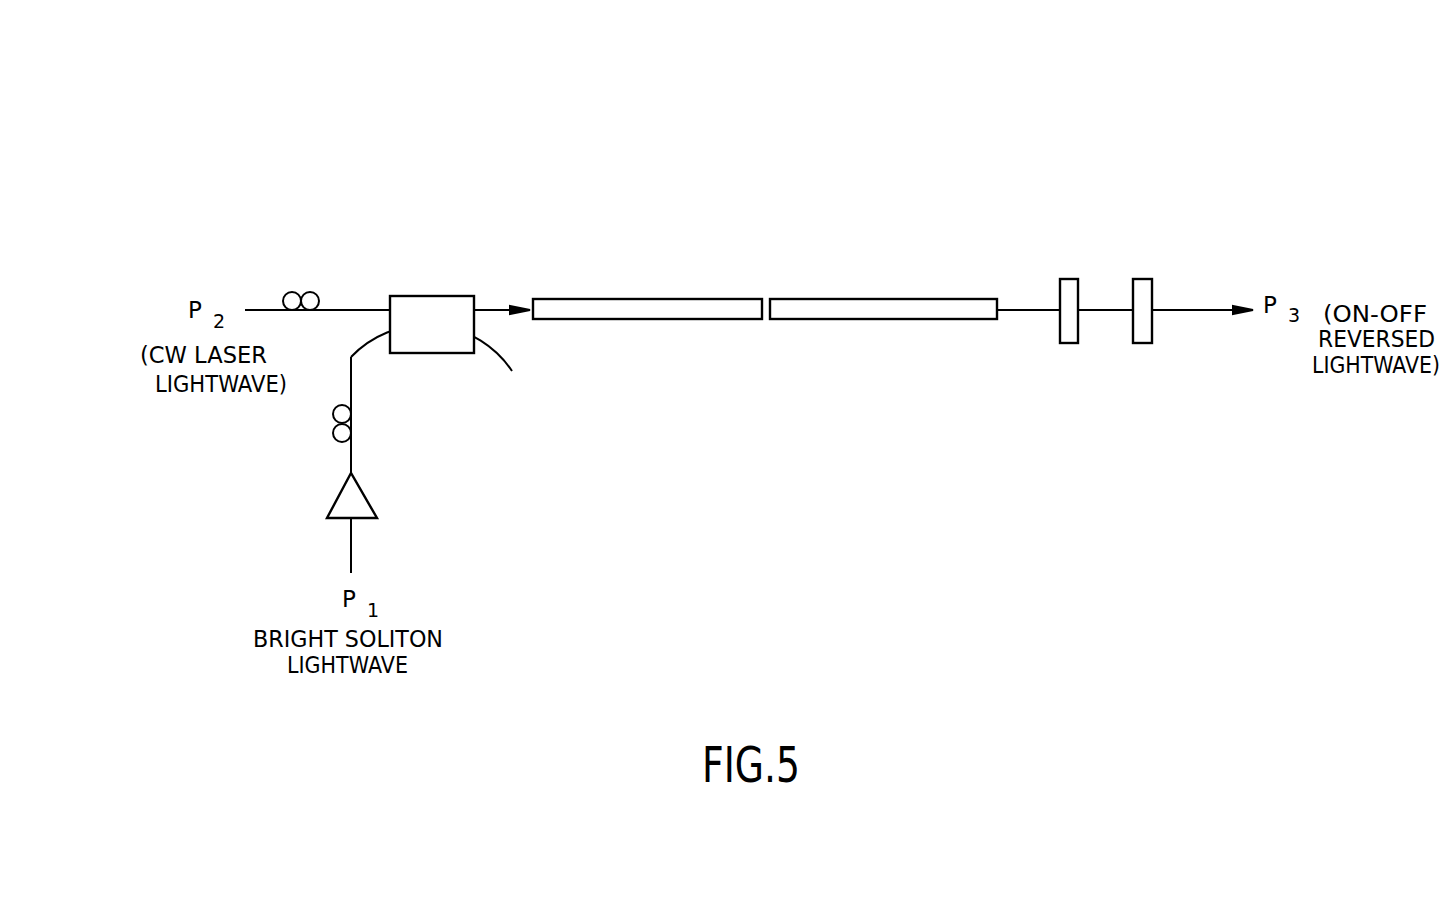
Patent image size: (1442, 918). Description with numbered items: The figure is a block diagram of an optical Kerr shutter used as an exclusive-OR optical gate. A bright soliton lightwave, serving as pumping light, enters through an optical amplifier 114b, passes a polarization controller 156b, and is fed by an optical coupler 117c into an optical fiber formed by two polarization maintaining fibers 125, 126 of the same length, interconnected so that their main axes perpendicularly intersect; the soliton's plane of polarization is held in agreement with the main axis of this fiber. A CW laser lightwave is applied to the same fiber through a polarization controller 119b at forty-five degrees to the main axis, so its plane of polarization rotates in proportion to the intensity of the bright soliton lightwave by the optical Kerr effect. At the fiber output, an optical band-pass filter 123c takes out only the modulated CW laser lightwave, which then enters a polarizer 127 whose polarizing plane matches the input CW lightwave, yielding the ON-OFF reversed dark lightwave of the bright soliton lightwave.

The polarization controller 119b is at (305, 293).
The optical coupler 117c is at (400, 296).
The polarization maintaining fiber 125 is at (627, 319).
The polarization maintaining fiber 126 is at (898, 319).
The optical band-pass filter 123c is at (1073, 279).
The polarizer 127 is at (1143, 343).
The polarization controller 156b is at (330, 415).
The optical amplifier 114b is at (335, 493).